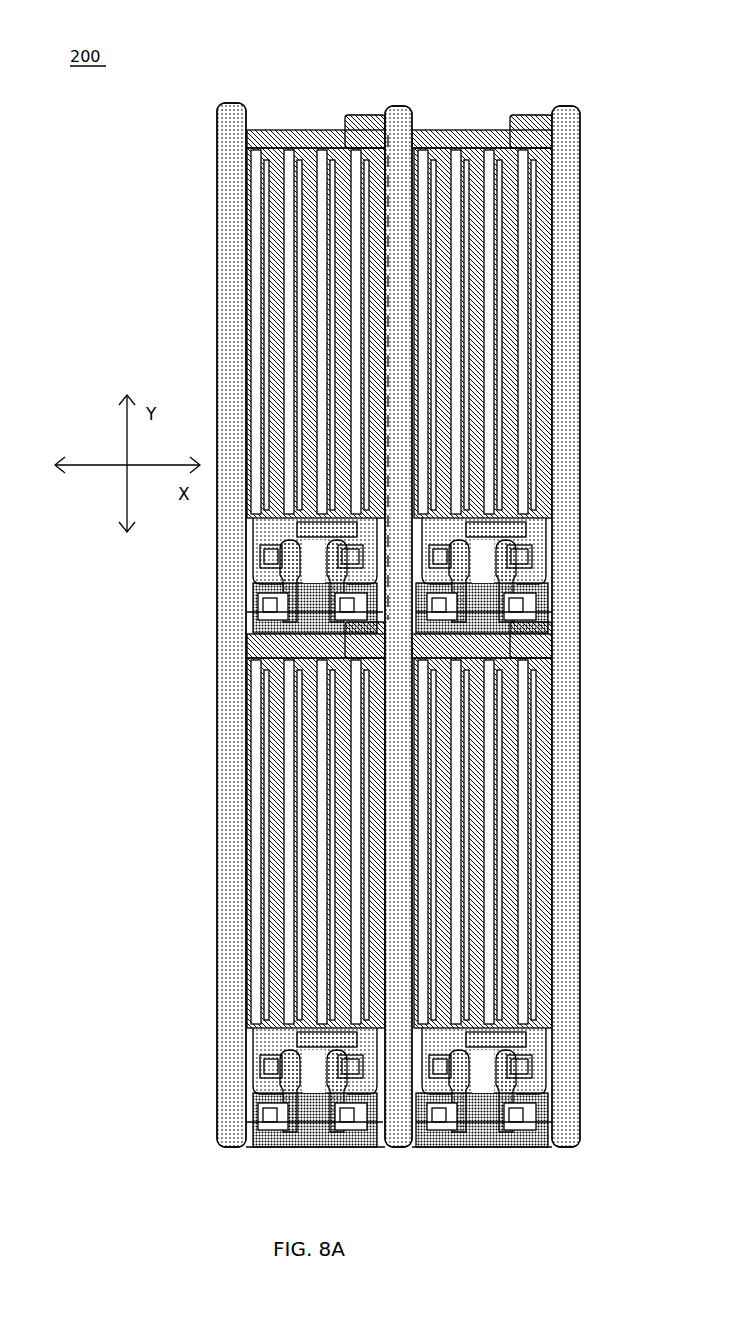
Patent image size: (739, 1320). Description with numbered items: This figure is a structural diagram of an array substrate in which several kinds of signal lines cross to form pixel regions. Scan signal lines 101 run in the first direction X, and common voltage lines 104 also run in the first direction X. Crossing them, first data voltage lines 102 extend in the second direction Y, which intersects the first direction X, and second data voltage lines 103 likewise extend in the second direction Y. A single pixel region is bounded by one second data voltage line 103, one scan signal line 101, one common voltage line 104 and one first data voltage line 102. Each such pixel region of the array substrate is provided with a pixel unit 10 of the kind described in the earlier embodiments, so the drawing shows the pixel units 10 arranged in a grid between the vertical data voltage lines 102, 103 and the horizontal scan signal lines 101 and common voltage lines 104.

The pixel unit 10 is at (244, 203).
The scan signal line 101 is at (246, 624).
The first data voltage line 102 is at (563, 124).
The second data voltage line 103 is at (395, 122).
The common voltage line 104 is at (254, 130).